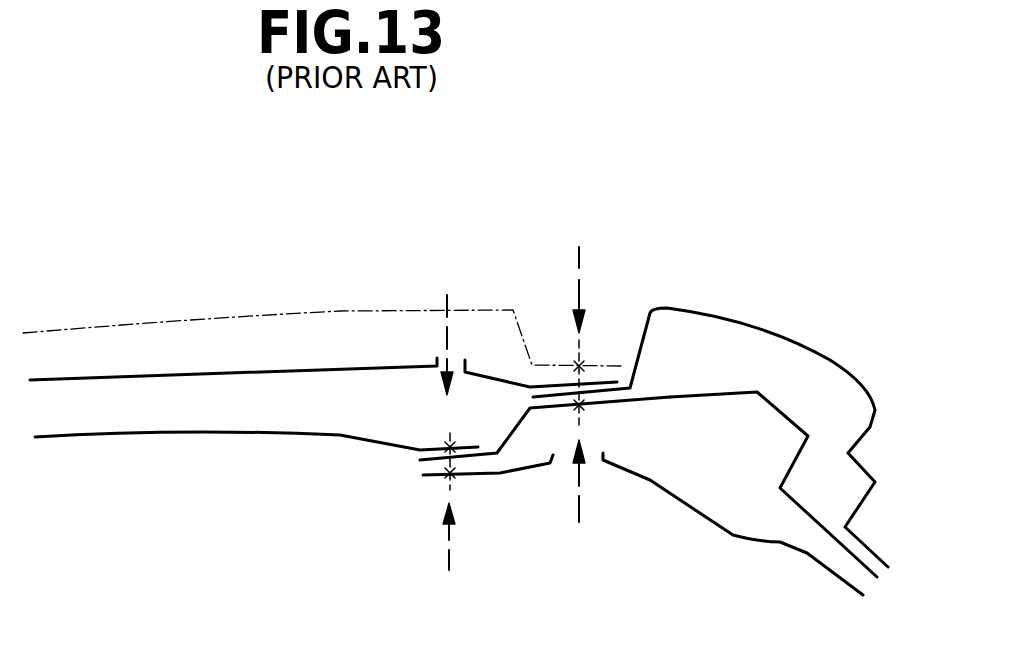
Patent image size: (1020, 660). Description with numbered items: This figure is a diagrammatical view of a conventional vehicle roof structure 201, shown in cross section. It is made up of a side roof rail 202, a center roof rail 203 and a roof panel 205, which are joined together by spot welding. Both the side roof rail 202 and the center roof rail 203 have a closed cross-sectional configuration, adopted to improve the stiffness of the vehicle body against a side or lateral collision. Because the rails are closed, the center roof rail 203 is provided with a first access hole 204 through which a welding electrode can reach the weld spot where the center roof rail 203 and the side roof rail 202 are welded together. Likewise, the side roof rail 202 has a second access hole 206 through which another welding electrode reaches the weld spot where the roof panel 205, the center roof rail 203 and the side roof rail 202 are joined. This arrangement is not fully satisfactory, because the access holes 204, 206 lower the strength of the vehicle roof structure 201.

The vehicle roof structure 201 is at (592, 163).
The side roof rail 202 is at (767, 370).
The center roof rail 203 is at (150, 358).
The first access hole 204 is at (437, 363).
The roof panel 205 is at (245, 313).
The second access hole 206 is at (562, 468).